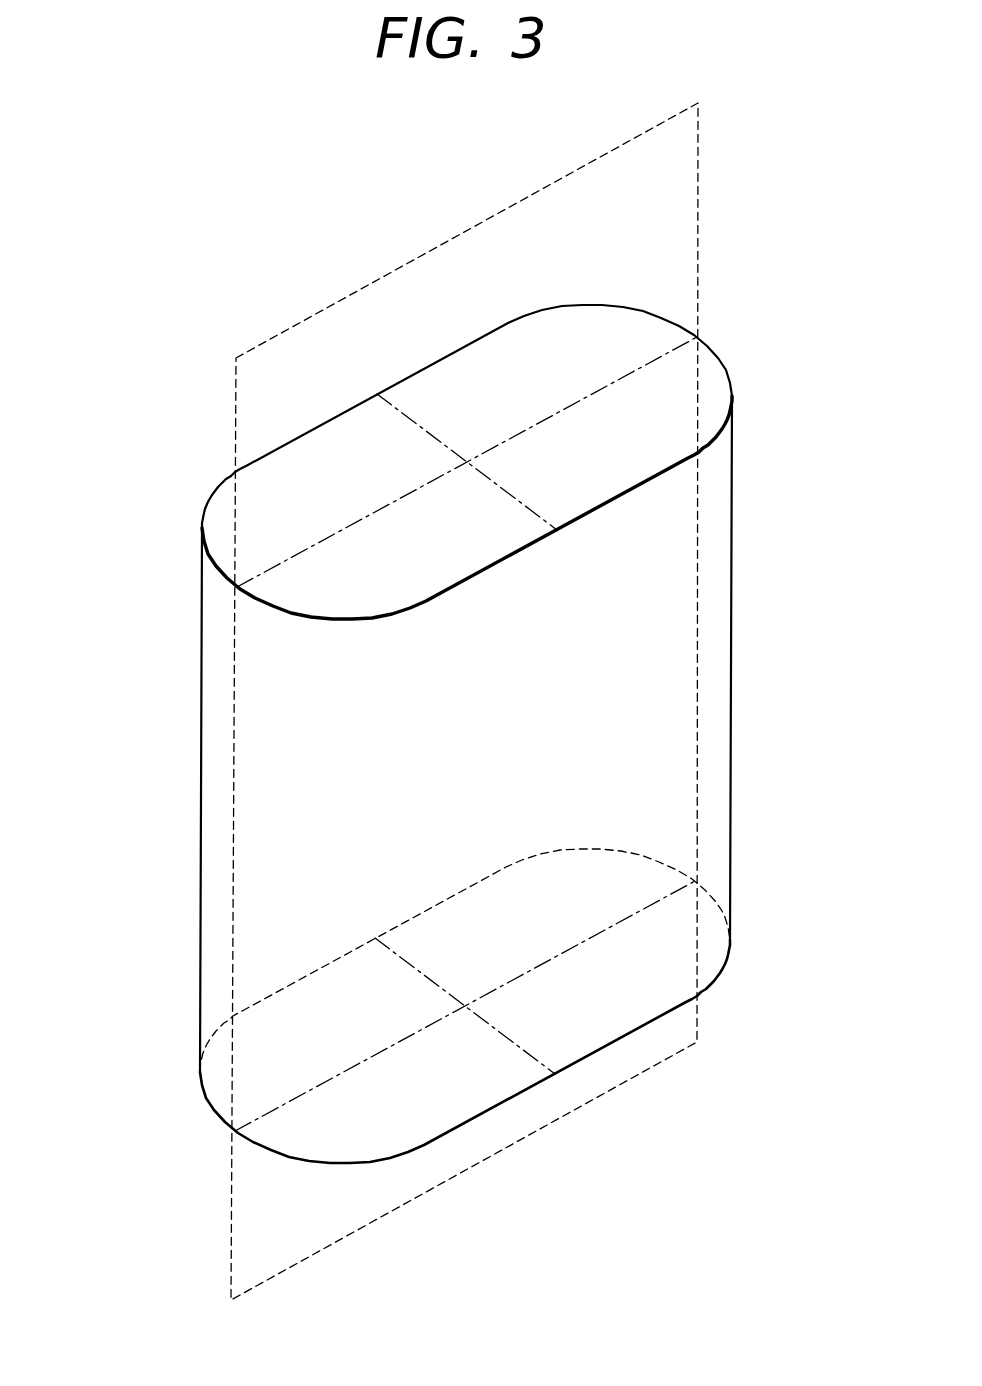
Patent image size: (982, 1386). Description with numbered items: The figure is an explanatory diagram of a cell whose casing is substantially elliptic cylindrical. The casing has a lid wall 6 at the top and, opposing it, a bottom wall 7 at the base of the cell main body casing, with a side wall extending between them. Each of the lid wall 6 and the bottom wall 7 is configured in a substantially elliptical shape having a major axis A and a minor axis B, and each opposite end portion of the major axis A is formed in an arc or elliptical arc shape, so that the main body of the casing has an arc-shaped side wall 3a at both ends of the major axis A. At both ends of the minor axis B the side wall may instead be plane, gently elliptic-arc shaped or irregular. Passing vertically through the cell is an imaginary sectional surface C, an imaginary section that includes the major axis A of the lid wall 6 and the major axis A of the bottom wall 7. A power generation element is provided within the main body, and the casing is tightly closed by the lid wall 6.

The lid wall 6 is at (650, 420).
The bottom wall 7 is at (437, 1107).
The arc-shaped side wall 3a is at (215, 723).
The major axis A is at (297, 555).
The minor axis B is at (403, 378).
The imaginary sectional surface C is at (688, 217).